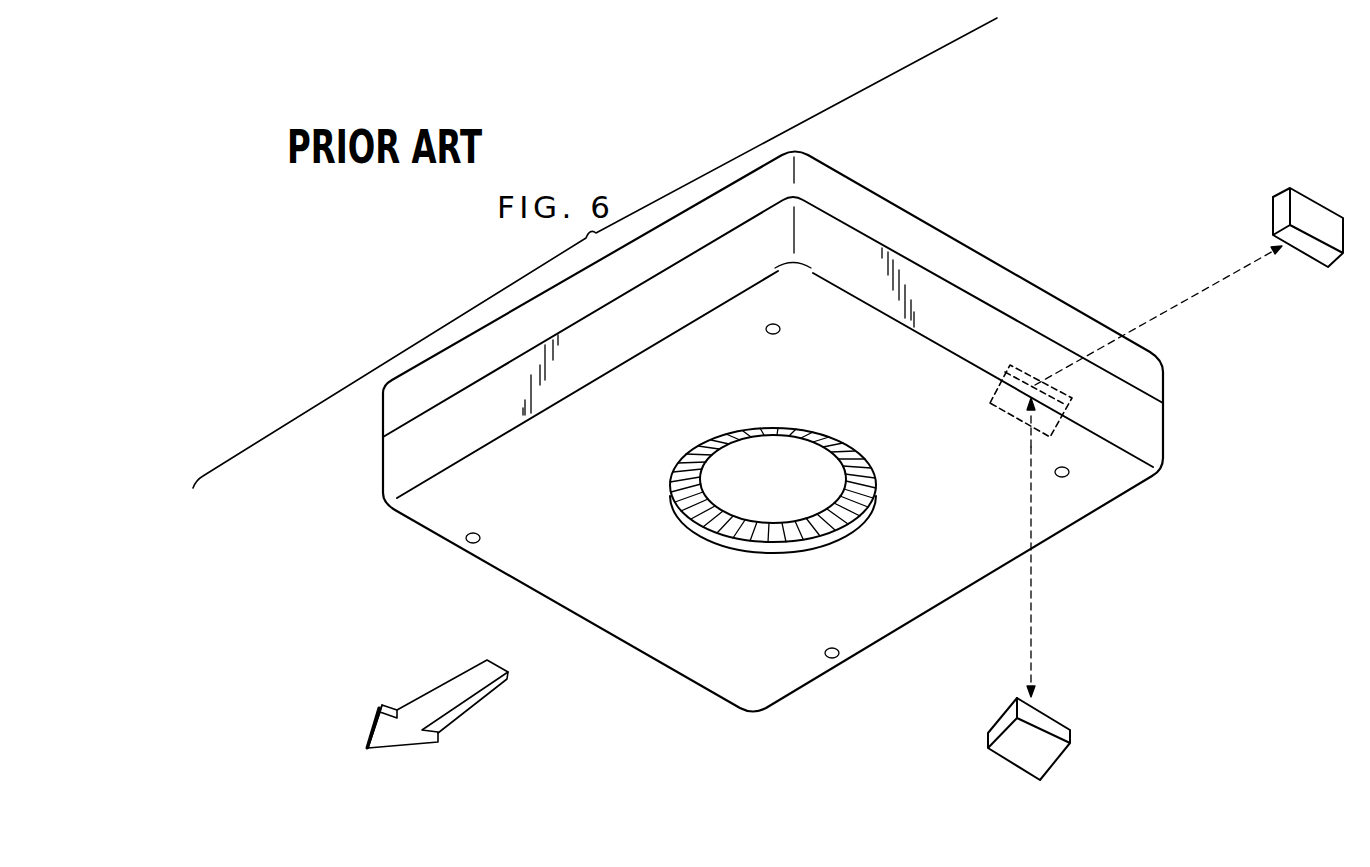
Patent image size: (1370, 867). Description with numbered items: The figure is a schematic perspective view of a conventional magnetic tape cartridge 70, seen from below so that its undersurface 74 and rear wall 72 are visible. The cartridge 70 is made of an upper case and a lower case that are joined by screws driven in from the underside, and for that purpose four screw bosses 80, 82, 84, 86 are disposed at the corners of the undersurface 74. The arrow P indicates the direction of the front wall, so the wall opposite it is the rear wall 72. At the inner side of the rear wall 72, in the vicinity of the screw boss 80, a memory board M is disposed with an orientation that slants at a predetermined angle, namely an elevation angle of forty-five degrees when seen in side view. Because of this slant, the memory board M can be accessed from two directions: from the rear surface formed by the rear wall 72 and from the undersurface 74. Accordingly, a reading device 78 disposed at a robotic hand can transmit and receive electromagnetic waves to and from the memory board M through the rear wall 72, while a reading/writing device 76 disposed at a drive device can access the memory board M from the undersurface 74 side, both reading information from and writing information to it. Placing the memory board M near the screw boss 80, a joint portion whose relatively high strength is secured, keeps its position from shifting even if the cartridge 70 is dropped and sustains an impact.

The magnetic tape cartridge 70 is at (874, 168).
The rear wall 72 is at (940, 297).
The undersurface 74 is at (770, 642).
The reading/writing device 76 is at (1050, 769).
The reading device 78 is at (1283, 207).
The screw boss 80 is at (1068, 478).
The screw boss 82 is at (770, 326).
The screw boss 84 is at (833, 660).
The screw boss 86 is at (470, 548).
The memory board M is at (990, 387).
The arrow P is at (438, 695).